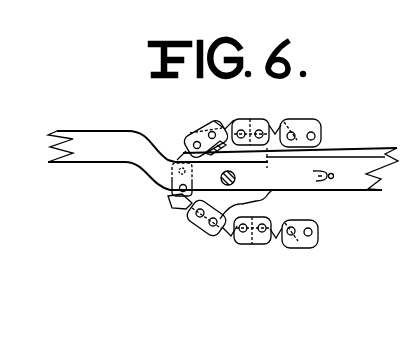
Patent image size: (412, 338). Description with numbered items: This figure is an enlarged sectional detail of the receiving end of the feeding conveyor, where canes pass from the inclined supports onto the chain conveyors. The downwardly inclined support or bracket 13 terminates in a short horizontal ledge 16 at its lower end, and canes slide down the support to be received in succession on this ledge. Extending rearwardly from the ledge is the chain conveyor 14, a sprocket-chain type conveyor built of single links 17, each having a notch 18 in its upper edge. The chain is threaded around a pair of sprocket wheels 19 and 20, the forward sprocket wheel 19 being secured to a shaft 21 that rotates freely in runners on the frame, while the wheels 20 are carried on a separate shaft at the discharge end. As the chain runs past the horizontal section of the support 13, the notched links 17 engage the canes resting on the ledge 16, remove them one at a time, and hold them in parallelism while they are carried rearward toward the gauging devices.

The support 13 is at (113, 130).
The chain conveyor 14 is at (206, 227).
The horizontal ledge 16 is at (175, 158).
The link 17 is at (286, 124).
The notch 18 is at (275, 124).
The sprocket wheel 19 is at (212, 199).
The sprocket wheel 20 is at (323, 176).
The shaft 21 is at (236, 178).